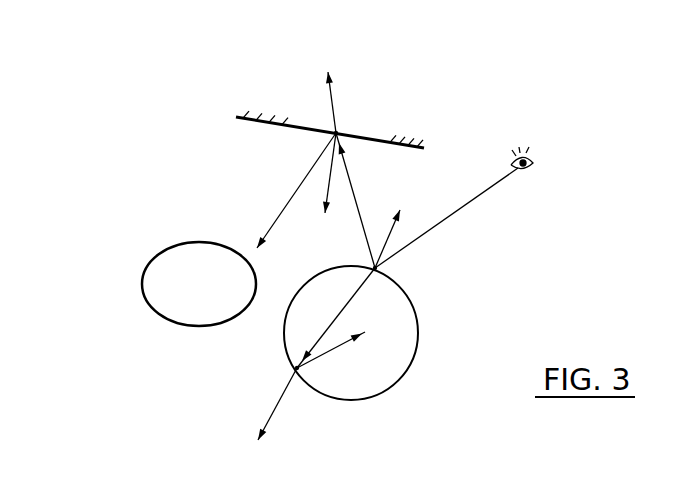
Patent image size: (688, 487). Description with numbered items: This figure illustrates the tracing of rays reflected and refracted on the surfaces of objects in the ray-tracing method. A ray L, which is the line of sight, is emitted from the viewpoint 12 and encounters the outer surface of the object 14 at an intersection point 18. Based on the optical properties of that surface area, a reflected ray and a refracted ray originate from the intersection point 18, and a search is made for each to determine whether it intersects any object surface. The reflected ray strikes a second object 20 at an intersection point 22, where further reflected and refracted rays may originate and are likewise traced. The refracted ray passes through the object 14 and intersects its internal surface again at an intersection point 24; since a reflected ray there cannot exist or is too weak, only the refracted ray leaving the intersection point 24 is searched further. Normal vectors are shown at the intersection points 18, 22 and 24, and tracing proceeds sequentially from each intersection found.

The viewpoint 12 is at (527, 152).
The object 14 is at (420, 325).
The intersection point 18 is at (377, 268).
The object 20 is at (393, 147).
The intersection point 22 is at (338, 132).
The intersection point 24 is at (296, 368).
The ray (line of sight) L is at (467, 203).